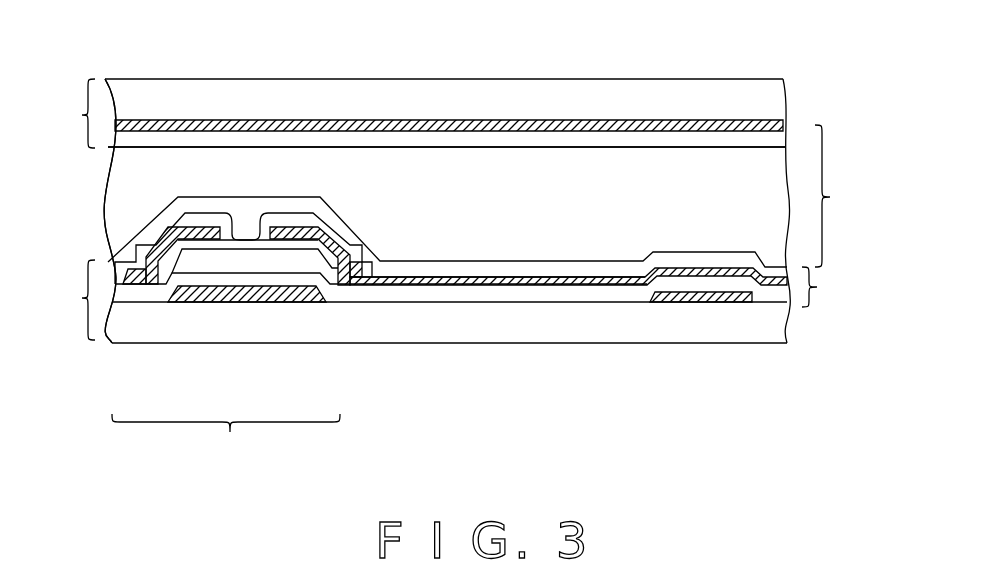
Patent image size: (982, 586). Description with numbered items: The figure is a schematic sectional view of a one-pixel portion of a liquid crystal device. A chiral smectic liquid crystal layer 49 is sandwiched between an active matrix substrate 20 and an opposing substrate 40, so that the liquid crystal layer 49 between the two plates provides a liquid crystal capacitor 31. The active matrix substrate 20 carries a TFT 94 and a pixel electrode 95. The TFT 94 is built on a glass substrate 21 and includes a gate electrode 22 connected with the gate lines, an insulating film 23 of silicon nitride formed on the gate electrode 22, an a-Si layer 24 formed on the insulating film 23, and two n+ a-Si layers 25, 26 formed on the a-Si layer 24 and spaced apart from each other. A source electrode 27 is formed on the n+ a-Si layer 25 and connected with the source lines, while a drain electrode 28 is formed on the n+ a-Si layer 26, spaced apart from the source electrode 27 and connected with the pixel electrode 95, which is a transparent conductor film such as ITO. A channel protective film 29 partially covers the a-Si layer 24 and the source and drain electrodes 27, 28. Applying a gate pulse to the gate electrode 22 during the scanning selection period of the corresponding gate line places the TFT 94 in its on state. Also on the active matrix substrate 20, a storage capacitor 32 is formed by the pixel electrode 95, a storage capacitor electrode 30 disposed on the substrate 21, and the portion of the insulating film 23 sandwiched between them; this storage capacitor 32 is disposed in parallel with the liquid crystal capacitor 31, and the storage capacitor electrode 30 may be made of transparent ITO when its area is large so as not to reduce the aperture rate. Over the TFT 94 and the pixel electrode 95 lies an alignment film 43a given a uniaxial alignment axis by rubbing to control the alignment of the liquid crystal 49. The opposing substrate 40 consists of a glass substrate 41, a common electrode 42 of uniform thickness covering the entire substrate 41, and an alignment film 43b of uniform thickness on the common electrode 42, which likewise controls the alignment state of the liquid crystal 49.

The active matrix substrate 20 is at (64, 300).
The substrate 21 is at (545, 328).
The gate electrode 22 is at (248, 296).
The insulating film 23 is at (275, 281).
The a-Si layer 24 is at (220, 269).
The n+ a-Si layer 25 is at (198, 246).
The n+ a-Si layer 26 is at (299, 242).
The source electrode 27 is at (143, 283).
The drain electrode 28 is at (343, 279).
The channel protective film 29 is at (303, 217).
The storage capacitor electrode 30 is at (697, 299).
The liquid crystal capacitor 31 is at (843, 196).
The storage capacitor 32 is at (832, 287).
The opposing substrate 40 is at (64, 113).
The substrate 41 is at (500, 106).
The common electrode 42 is at (549, 133).
The alignment film 43a is at (588, 276).
The alignment film 43b is at (672, 149).
The chiral smectic liquid crystal layer 49 is at (130, 185).
The TFT 94 is at (226, 445).
The pixel electrode 95 is at (497, 279).